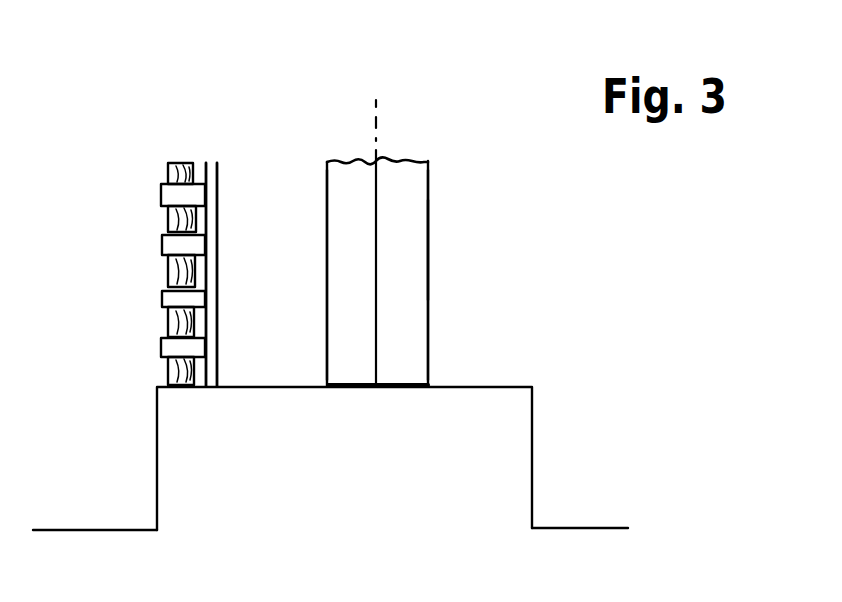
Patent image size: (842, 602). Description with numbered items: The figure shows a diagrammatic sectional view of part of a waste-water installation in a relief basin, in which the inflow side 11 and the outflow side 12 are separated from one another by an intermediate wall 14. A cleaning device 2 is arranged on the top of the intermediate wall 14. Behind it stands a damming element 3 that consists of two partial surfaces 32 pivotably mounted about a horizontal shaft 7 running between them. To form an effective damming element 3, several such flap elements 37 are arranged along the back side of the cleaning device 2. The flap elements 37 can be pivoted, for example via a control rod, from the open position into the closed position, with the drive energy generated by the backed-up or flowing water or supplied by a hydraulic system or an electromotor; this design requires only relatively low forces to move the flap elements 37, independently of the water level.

The cleaning device 2 is at (188, 121).
The damming element 3 is at (435, 109).
The horizontal shaft 7 is at (376, 330).
The inflow side 11 is at (106, 477).
The outflow side 12 is at (615, 492).
The intermediate wall 14 is at (507, 463).
The partial surface 32 is at (340, 235).
The flap element 37 is at (445, 260).